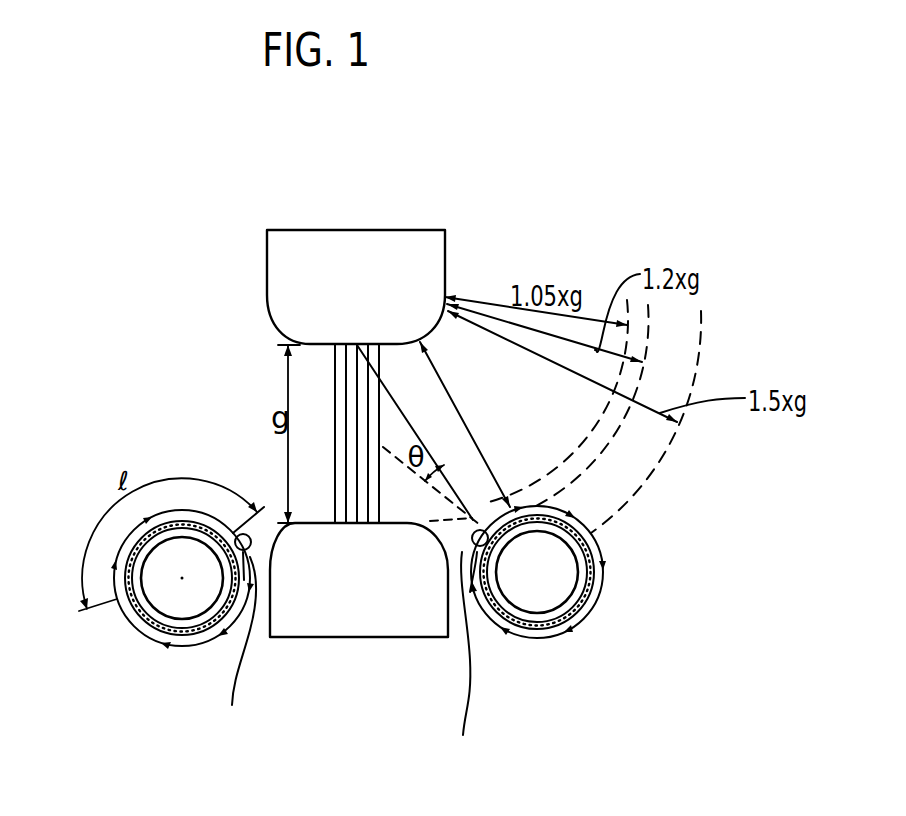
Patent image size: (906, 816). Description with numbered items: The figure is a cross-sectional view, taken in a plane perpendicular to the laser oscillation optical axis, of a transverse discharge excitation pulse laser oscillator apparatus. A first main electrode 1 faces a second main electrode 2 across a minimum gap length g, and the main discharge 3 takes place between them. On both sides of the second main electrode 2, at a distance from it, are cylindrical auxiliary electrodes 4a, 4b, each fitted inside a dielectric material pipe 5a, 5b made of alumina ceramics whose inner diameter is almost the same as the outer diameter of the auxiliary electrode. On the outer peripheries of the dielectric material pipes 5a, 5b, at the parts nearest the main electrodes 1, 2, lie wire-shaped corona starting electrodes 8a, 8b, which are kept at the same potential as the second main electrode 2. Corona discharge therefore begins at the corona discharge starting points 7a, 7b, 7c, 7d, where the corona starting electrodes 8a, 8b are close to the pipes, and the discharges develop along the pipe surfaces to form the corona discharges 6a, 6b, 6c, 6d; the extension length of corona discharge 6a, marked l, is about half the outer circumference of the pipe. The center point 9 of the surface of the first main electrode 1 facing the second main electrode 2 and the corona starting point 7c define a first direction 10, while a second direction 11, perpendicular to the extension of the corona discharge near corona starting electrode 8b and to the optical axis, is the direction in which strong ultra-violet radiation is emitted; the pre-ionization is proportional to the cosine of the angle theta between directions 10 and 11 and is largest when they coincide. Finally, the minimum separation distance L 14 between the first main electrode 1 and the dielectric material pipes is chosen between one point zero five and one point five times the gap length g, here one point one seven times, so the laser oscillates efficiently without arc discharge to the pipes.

The first main electrode 1 is at (282, 268).
The second main electrode 2 is at (345, 622).
The main discharge 3 is at (350, 390).
The auxiliary electrode 4a is at (168, 585).
The auxiliary electrode 4b is at (547, 580).
The dielectric material pipe 5a is at (153, 625).
The dielectric material pipe 5b is at (550, 625).
The corona discharge 6a is at (124, 546).
The corona discharge 6b is at (183, 653).
The corona discharge 6c is at (603, 547).
The corona discharge 6d is at (527, 640).
The corona discharge starting point 7a is at (241, 533).
The corona discharge starting point 7b is at (240, 648).
The corona discharge starting point 7c is at (487, 530).
The corona discharge starting point 7d is at (463, 663).
The corona starting electrode 8a is at (262, 518).
The corona starting electrode 8b is at (481, 548).
The center point 9 is at (358, 345).
The first direction 10 is at (445, 387).
The second direction 11 is at (383, 447).
The minimum separation distance L 14 is at (480, 407).